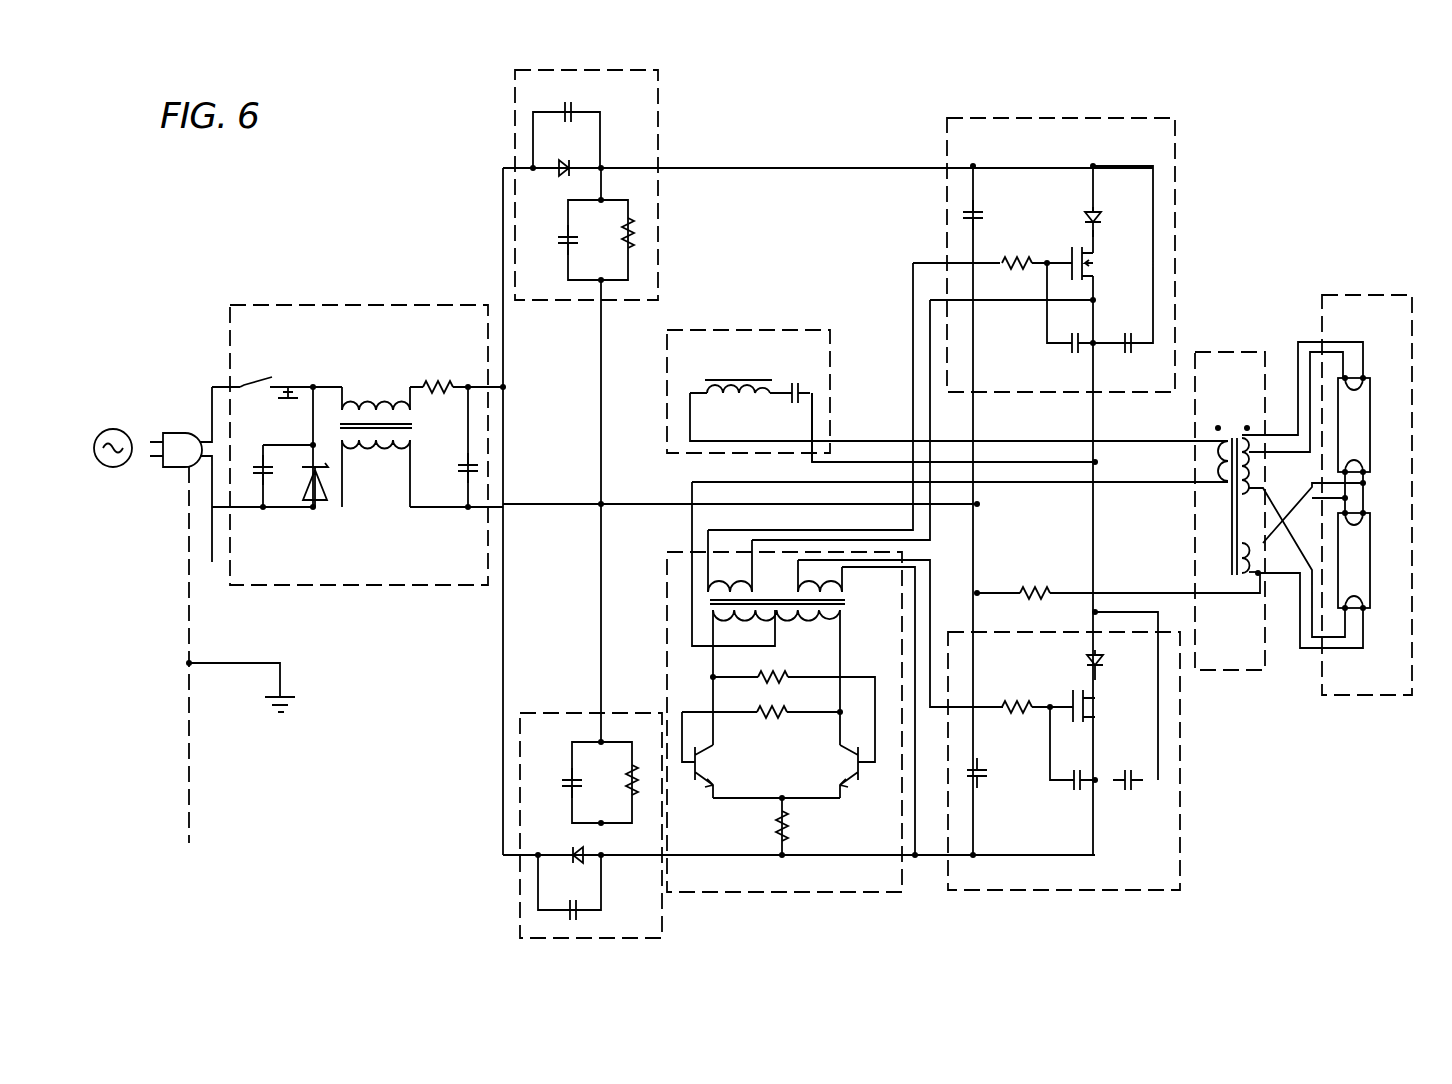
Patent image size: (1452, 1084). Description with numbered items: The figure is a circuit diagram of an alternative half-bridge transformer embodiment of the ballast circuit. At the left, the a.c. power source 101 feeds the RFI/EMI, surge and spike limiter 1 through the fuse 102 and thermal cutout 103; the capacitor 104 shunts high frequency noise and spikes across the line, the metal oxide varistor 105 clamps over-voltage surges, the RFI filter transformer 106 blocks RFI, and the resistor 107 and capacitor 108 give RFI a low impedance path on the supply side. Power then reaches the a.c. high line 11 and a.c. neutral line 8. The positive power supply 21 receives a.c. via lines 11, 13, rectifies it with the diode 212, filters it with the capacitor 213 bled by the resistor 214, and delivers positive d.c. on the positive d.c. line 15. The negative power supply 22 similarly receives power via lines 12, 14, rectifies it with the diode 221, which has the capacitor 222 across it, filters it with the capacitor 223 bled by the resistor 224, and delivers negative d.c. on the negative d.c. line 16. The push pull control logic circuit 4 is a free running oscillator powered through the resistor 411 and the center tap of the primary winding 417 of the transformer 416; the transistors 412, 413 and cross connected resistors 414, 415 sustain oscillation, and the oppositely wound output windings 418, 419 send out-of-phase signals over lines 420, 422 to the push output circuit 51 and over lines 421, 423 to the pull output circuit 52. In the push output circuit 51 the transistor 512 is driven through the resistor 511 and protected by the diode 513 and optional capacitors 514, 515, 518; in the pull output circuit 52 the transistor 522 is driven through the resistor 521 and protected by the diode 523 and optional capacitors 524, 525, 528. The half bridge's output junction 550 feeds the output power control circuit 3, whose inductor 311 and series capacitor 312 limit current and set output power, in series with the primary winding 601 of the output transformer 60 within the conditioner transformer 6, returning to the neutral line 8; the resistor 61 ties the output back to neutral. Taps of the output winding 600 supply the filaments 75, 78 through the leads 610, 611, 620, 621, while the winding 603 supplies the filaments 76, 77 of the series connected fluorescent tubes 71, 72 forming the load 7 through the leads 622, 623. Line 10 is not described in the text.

The RFI/EMI, surge and spike limiter 1 is at (272, 304).
The a.c. power source 101 is at (109, 430).
The fuse 102 is at (256, 378).
The thermal cutout 103 is at (292, 380).
The capacitor 104 is at (272, 500).
The metal oxide varistor 105 is at (320, 500).
The RFI filter transformer 106 is at (380, 406).
The resistor 107 is at (438, 379).
The capacitor 108 is at (466, 466).
The output power control circuit 3 is at (775, 329).
The inductor 311 is at (731, 384).
The series capacitor 312 is at (794, 384).
The push pull control logic circuit 4 is at (667, 622).
The resistor 411 is at (789, 826).
The transistor 412 is at (702, 762).
The transistor 413 is at (852, 762).
The resistor 414 is at (772, 714).
The resistor 415 is at (784, 677).
The transformer 416 is at (844, 602).
The primary winding 417 is at (806, 616).
The output winding 418 is at (712, 586).
The output winding 419 is at (802, 590).
The line 420 is at (913, 520).
The line 421 is at (930, 570).
The line 422 is at (930, 518).
The line 423 is at (915, 630).
The positive power supply 21 is at (514, 104).
The rectifier diode 212 is at (572, 112).
The capacitor 213 is at (563, 250).
The resistor 214 is at (637, 230).
The negative power supply 22 is at (520, 893).
The rectifier diode 221 is at (568, 852).
The capacitor 222 is at (580, 916).
The capacitor 223 is at (566, 782).
The resistor 224 is at (628, 792).
The push output circuit 51 is at (1148, 118).
The resistor 511 is at (1016, 260).
The transistor 512 is at (1095, 260).
The diode 513 is at (1096, 214).
The capacitor 514 is at (980, 216).
The capacitor 515 is at (1068, 348).
The capacitor 518 is at (1127, 335).
The pull output circuit 52 is at (1180, 878).
The resistor 521 is at (1013, 702).
The transistor 522 is at (1095, 702).
The diode 523 is at (1086, 658).
The capacitor 524 is at (984, 781).
The capacitor 525 is at (1070, 792).
The capacitor 528 is at (1130, 792).
The output junction 550 is at (1098, 462).
The resistor 61 is at (1037, 582).
The transformer 6 is at (1226, 352).
The output transformer 60 is at (1232, 428).
The output winding transformer 600 is at (1215, 499).
The output transformer primary winding 601 is at (1220, 470).
The winding 603 is at (1237, 580).
The lead 610 is at (1271, 433).
The lead 611 is at (1277, 453).
The lead 620 is at (1245, 503).
The lead 621 is at (1245, 533).
The lead 622 is at (1289, 580).
The lead 623 is at (1260, 575).
The load 7 is at (1378, 295).
The fluorescent tube 71 is at (1370, 420).
The fluorescent tube 72 is at (1370, 578).
The filament 75 is at (1360, 391).
The filament 76 is at (1363, 460).
The filament 77 is at (1364, 524).
The filament 78 is at (1367, 607).
The a.c. neutral line 8 is at (553, 502).
The line 10 is at (1015, 462).
The a.c. high line 11 is at (505, 352).
The line 12 is at (504, 422).
The line 13 is at (602, 404).
The line 14 is at (602, 582).
The positive d.c. line 15 is at (727, 168).
The negative d.c. line 16 is at (712, 855).